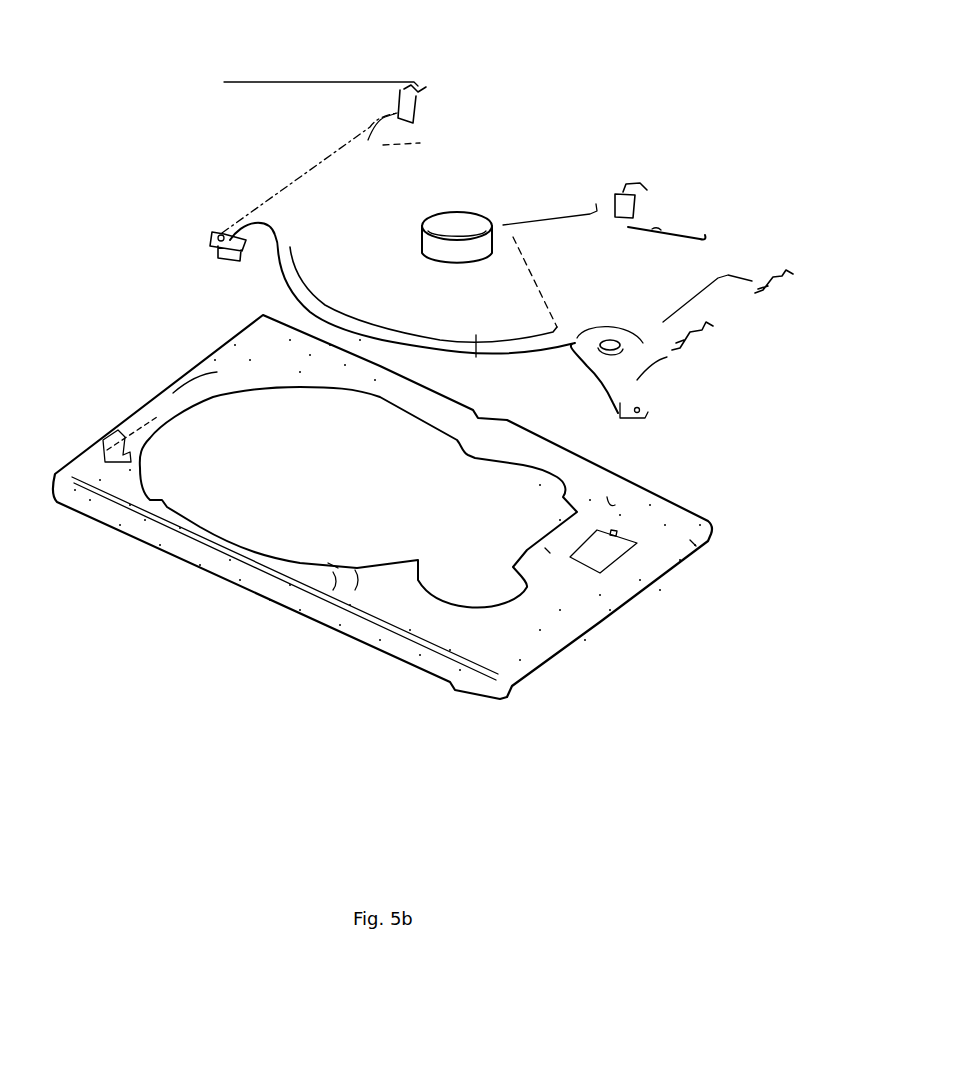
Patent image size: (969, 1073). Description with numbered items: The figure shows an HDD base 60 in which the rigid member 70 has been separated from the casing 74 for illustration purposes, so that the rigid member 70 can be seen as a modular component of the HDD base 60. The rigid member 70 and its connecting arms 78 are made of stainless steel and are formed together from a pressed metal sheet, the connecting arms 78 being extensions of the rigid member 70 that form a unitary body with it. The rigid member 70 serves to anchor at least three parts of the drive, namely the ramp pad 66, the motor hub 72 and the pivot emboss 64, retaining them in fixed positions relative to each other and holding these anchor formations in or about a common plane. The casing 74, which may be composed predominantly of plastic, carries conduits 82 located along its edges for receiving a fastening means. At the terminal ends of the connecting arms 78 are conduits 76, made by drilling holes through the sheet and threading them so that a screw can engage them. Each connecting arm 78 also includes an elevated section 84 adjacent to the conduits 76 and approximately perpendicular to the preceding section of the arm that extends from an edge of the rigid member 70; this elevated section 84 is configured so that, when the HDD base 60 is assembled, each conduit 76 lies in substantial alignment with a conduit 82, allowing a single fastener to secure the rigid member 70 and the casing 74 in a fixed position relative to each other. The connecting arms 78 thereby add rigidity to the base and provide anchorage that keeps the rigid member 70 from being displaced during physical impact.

The HDD base 60 is at (656, 723).
The pivot emboss 64 is at (614, 348).
The ramp pad 66 is at (683, 230).
The rigid member 70 is at (348, 272).
The motor hub 72 is at (460, 253).
The casing 74 is at (594, 623).
The conduits 76 is at (218, 233).
The connecting arms 78 is at (745, 274).
The conduits 82 is at (497, 643).
The elevated section 84 is at (617, 205).